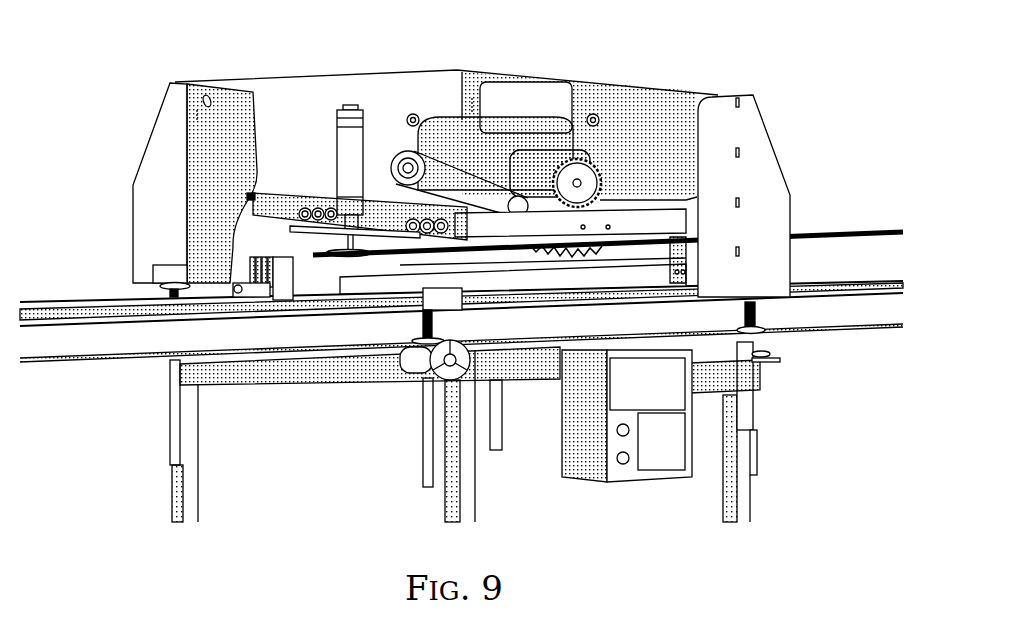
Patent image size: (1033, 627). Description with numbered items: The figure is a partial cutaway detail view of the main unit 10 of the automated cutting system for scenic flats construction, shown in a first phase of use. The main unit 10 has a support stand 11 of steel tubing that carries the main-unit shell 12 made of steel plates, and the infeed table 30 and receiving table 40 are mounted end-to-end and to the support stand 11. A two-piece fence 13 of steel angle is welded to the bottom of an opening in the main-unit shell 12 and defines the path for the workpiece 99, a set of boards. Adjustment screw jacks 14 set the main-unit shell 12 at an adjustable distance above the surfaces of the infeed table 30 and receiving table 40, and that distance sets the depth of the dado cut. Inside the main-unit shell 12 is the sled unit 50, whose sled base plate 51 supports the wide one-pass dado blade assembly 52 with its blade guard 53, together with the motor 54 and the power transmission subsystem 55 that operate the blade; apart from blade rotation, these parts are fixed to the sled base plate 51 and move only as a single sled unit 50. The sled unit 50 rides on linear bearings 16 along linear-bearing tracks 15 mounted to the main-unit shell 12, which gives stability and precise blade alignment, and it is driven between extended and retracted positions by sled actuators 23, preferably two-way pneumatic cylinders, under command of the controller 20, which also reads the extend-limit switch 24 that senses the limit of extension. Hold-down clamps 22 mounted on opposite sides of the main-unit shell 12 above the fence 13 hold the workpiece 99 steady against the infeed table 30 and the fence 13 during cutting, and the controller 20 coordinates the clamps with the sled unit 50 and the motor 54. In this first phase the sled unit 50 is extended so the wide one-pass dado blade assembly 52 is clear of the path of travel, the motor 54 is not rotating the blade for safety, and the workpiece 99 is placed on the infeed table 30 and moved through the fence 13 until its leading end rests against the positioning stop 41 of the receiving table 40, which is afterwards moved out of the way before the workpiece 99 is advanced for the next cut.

The main unit 10 is at (160, 46).
The support stand 11 is at (745, 488).
The main-unit shell 12 is at (300, 78).
The two-piece fence 13 is at (352, 314).
The adjustment screw jacks 14 is at (175, 290).
The linear-bearing tracks 15 is at (240, 225).
The linear bearings 16 is at (304, 200).
The controller 20 is at (585, 468).
The hold-down clamps 22 is at (340, 155).
The sled actuators 23 is at (297, 192).
The extend-limit switch 24 is at (717, 97).
The infeed table 30 is at (874, 333).
The receiving table 40 is at (461, 423).
The positioning stop 41 is at (282, 298).
The sled unit 50 is at (535, 155).
The sled base plate 51 is at (300, 234).
The wide one-pass dado blade assembly 52 is at (630, 166).
The blade guard 53 is at (528, 182).
The motor 54 is at (480, 118).
The power transmission subsystem 55 is at (412, 202).
The workpiece 99 is at (860, 240).